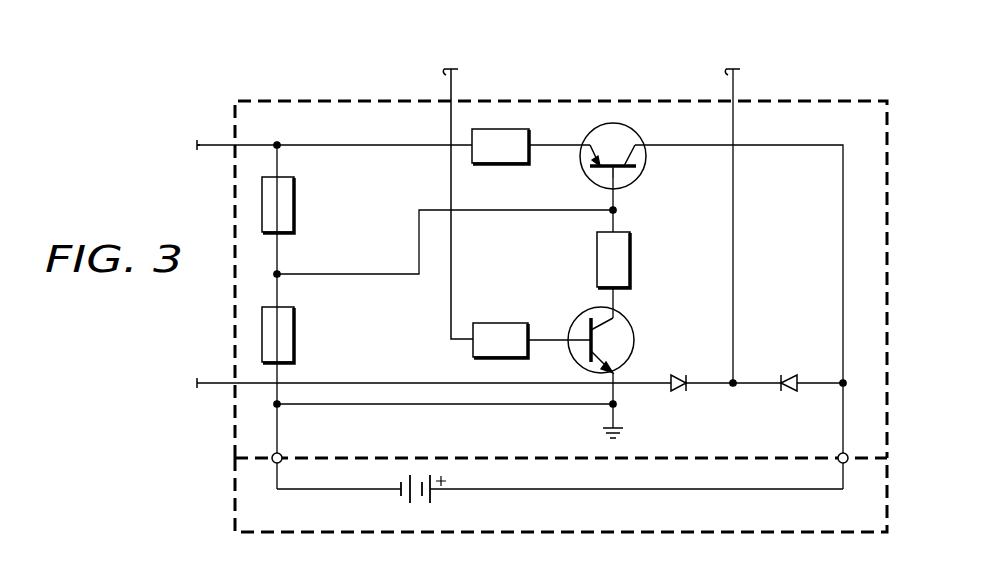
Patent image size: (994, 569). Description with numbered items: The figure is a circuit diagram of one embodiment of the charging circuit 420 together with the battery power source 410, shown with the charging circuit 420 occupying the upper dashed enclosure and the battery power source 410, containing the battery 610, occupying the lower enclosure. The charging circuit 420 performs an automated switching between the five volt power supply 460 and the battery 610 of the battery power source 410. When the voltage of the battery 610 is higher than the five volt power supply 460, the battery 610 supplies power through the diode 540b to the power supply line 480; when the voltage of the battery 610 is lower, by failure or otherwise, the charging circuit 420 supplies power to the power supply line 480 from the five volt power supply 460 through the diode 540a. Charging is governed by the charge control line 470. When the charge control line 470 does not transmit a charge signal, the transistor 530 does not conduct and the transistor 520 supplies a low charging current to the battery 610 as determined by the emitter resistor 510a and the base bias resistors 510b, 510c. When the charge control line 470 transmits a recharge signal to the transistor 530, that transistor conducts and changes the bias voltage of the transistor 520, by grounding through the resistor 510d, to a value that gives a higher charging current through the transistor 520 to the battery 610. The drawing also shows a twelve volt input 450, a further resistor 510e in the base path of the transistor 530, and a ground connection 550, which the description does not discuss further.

The battery power source 410 is at (818, 521).
The charging circuit 420 is at (281, 99).
The 12V terminal 450 is at (199, 149).
The 5 volt power supply 460 is at (199, 387).
The charge control line 470 is at (453, 90).
The power supply line 480 is at (731, 92).
The emitter resistor 510a is at (503, 164).
The base bias resistor 510b is at (296, 184).
The base bias resistor 510c is at (296, 341).
The resistor 510d is at (596, 262).
The resistor R5 510e is at (494, 323).
The transistor 520 is at (634, 184).
The transistor 530 is at (632, 316).
The diode 540a is at (684, 373).
The diode 540b is at (788, 373).
The ground 550 is at (603, 434).
The battery 610 is at (401, 492).